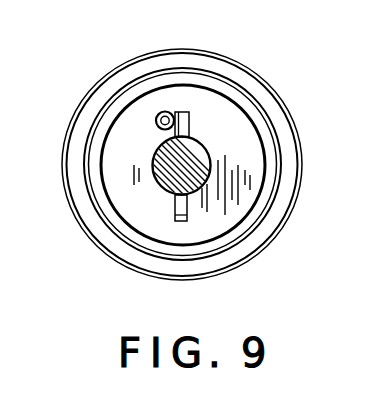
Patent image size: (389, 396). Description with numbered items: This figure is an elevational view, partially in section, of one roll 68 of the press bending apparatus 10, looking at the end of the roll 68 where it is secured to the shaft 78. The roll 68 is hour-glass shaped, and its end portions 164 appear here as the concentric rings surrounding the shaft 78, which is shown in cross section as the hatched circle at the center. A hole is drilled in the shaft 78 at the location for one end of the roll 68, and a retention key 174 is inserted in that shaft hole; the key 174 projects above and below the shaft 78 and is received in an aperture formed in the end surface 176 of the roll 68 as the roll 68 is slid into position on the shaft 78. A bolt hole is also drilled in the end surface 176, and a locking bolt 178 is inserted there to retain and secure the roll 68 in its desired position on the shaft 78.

The press bending apparatus 10 is at (153, 122).
The roll 68 is at (101, 249).
The shaft 78 is at (163, 169).
The end portions 164 is at (265, 82).
The retention key 174 is at (189, 207).
The end surface 176 is at (240, 203).
The locking bolt 178 is at (162, 112).